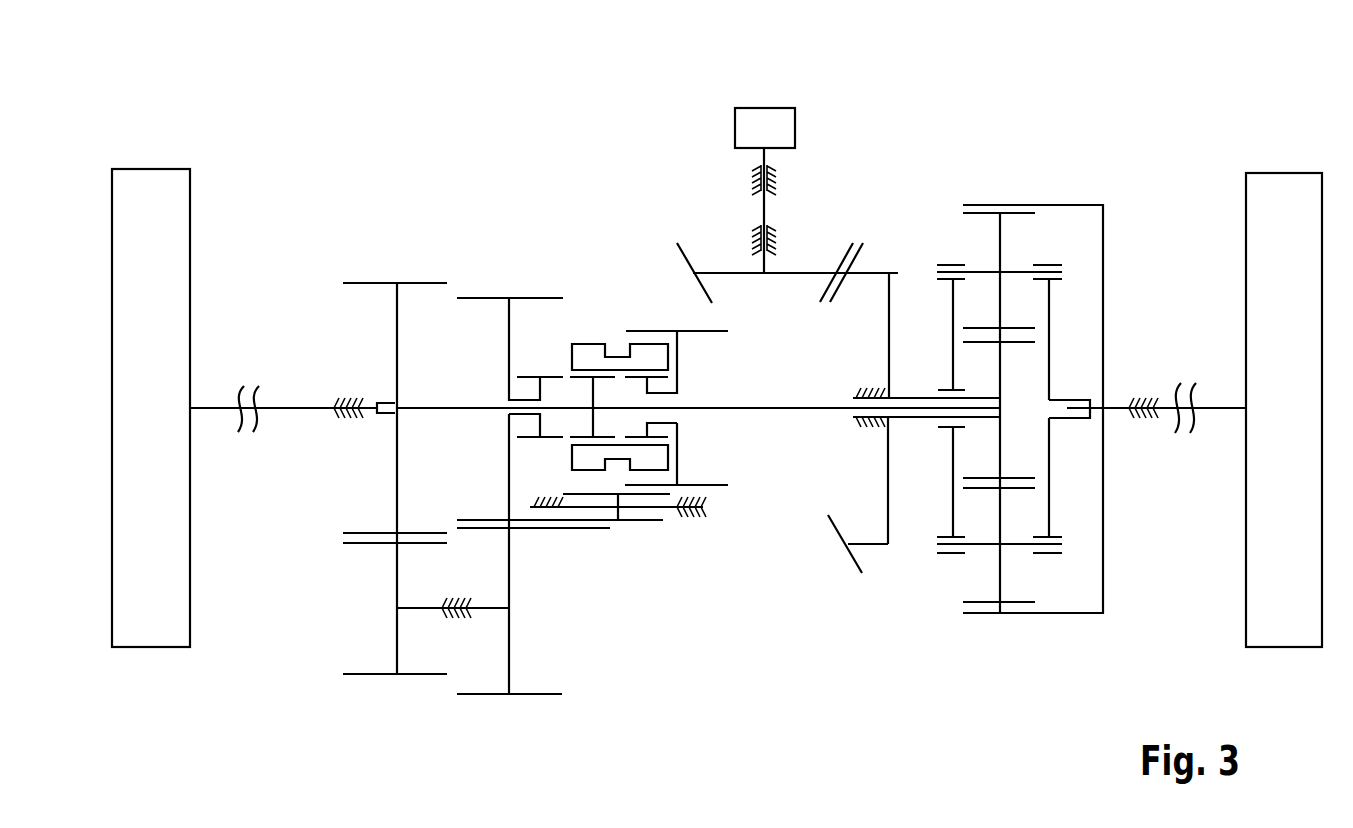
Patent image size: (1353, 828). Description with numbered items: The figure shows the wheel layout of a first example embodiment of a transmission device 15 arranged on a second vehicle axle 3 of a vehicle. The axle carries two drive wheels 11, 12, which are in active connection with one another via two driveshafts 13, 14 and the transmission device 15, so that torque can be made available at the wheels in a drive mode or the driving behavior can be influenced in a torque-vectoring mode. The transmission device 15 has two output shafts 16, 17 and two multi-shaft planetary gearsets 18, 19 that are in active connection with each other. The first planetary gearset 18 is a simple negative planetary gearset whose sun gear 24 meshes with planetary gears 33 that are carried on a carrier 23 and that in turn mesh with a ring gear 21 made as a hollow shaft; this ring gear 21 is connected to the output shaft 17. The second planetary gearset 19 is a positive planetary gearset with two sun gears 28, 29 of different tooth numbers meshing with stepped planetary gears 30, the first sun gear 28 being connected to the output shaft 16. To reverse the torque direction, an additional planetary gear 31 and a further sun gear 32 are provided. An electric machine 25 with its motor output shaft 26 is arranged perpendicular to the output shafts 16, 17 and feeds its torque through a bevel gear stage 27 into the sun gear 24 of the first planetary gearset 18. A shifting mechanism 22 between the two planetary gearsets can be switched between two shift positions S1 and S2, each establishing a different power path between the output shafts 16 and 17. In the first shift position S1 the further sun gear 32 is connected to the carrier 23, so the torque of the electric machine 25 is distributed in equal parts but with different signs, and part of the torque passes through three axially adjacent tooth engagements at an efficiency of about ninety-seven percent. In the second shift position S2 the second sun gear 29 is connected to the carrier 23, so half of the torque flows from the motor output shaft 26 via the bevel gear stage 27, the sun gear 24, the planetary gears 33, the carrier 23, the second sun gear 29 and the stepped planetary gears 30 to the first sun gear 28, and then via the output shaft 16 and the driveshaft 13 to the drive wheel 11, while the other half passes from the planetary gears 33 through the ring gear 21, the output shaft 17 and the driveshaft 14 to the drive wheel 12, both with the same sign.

The second vehicle axle 3 is at (253, 158).
The drive wheel 11 is at (133, 185).
The drive wheel 12 is at (1285, 200).
The driveshaft 13 is at (218, 407).
The driveshaft 14 is at (1203, 407).
The transmission device 15 is at (412, 250).
The output shaft 16 is at (270, 412).
The output shaft 17 is at (1165, 407).
The first planetary gearset 18 is at (995, 190).
The second planetary gearset 19 is at (453, 255).
The ring gear 21 is at (1103, 300).
The shifting mechanism 22 is at (602, 327).
The carrier 23 is at (952, 312).
The sun gear 24 is at (997, 447).
The electric machine 25 is at (752, 105).
The motor output shaft 26 is at (763, 210).
The bevel gear stage 27 is at (840, 240).
The first sun gear 28 is at (395, 487).
The second sun gear 29 is at (508, 465).
The stepped planetary gears 30 is at (390, 683).
The additional planetary gear 31 is at (650, 520).
The further sun gear 32 is at (716, 487).
The planetary gears 33 is at (1000, 577).
The first shift position S1 is at (655, 327).
The second shift position S2 is at (535, 368).